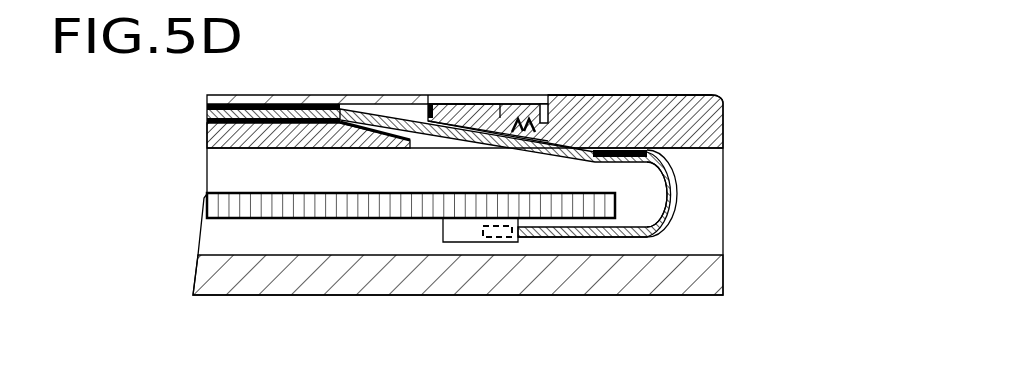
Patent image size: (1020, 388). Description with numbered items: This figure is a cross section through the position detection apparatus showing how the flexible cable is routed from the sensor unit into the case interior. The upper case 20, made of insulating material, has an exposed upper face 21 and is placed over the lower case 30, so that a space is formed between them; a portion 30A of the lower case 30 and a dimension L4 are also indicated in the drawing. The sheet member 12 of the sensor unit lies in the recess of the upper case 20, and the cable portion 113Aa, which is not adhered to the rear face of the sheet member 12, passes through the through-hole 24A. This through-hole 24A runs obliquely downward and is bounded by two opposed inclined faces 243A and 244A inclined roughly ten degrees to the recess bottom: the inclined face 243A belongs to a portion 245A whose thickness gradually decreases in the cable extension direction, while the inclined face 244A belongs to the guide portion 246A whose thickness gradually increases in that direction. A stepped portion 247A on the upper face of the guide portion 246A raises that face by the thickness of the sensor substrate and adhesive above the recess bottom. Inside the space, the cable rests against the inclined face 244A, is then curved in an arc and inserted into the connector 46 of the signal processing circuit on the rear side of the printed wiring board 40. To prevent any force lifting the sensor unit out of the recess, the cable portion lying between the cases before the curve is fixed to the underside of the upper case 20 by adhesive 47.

The sheet member 12 is at (323, 104).
The upper case 20 is at (723, 113).
The upper face of the upper case 21 is at (656, 95).
The through-hole 24A is at (426, 142).
The lower case 30 is at (552, 277).
The bottom portion of housing 30A is at (618, 238).
The printed wiring board 40 is at (262, 207).
The connector 46 is at (457, 227).
The adhesive 47 is at (664, 151).
The portion of the flexible cable 113Aa is at (467, 137).
The inclined face 243A is at (384, 132).
The inclined face 244A is at (455, 126).
The portion having the inclined face 245A is at (350, 141).
The guide portion 246A is at (508, 102).
The stepped portion 247A is at (448, 104).
The length L4 is at (548, 95).